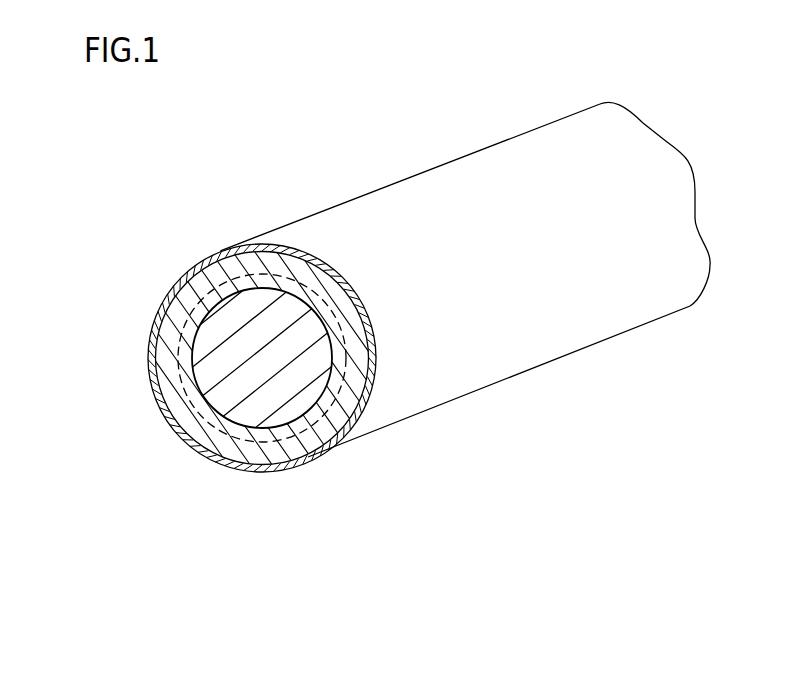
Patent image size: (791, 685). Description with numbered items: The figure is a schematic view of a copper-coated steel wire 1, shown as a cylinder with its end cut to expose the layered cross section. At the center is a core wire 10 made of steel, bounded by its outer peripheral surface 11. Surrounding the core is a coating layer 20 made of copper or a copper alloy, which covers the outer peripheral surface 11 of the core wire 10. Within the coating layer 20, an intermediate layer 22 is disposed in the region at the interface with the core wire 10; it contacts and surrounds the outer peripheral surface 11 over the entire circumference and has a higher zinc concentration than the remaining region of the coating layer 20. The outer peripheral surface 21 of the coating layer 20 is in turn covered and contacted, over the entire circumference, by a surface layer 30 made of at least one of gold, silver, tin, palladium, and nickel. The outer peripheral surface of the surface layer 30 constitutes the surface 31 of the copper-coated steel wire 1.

The copper-coated steel wire 1 is at (266, 172).
The core wire 10 is at (262, 405).
The outer peripheral surface of the core wire 11 is at (306, 420).
The coating layer 20 is at (343, 383).
The outer peripheral surface of the coating layer 21 is at (372, 380).
The intermediate layer 22 is at (200, 413).
The surface layer 30 is at (333, 264).
The surface 31 is at (350, 283).